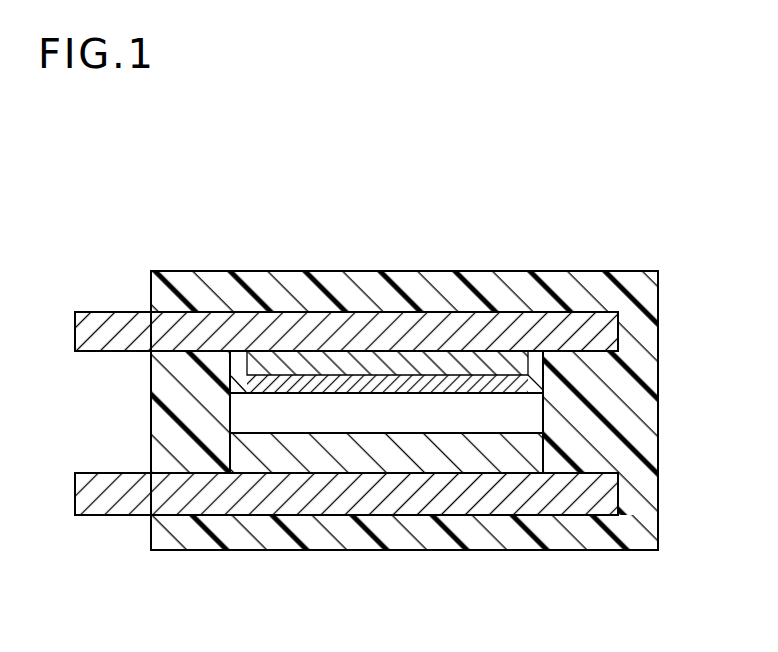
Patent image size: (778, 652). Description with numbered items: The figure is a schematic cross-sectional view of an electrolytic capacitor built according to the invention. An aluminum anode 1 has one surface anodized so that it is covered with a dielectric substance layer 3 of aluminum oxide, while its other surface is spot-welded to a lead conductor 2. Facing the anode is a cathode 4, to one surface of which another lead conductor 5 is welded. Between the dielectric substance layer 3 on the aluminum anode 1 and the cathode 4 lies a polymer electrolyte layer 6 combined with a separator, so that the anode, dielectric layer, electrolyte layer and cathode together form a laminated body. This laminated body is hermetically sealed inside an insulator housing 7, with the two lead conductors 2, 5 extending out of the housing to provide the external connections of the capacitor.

The aluminum anode 1 is at (503, 352).
The lead conductor 2 is at (186, 318).
The dielectric substance layer 3 is at (535, 373).
The cathode 4 is at (307, 470).
The lead conductor 5 is at (117, 508).
The polymer electrolyte layer 6 is at (518, 425).
The insulator housing 7 is at (440, 542).